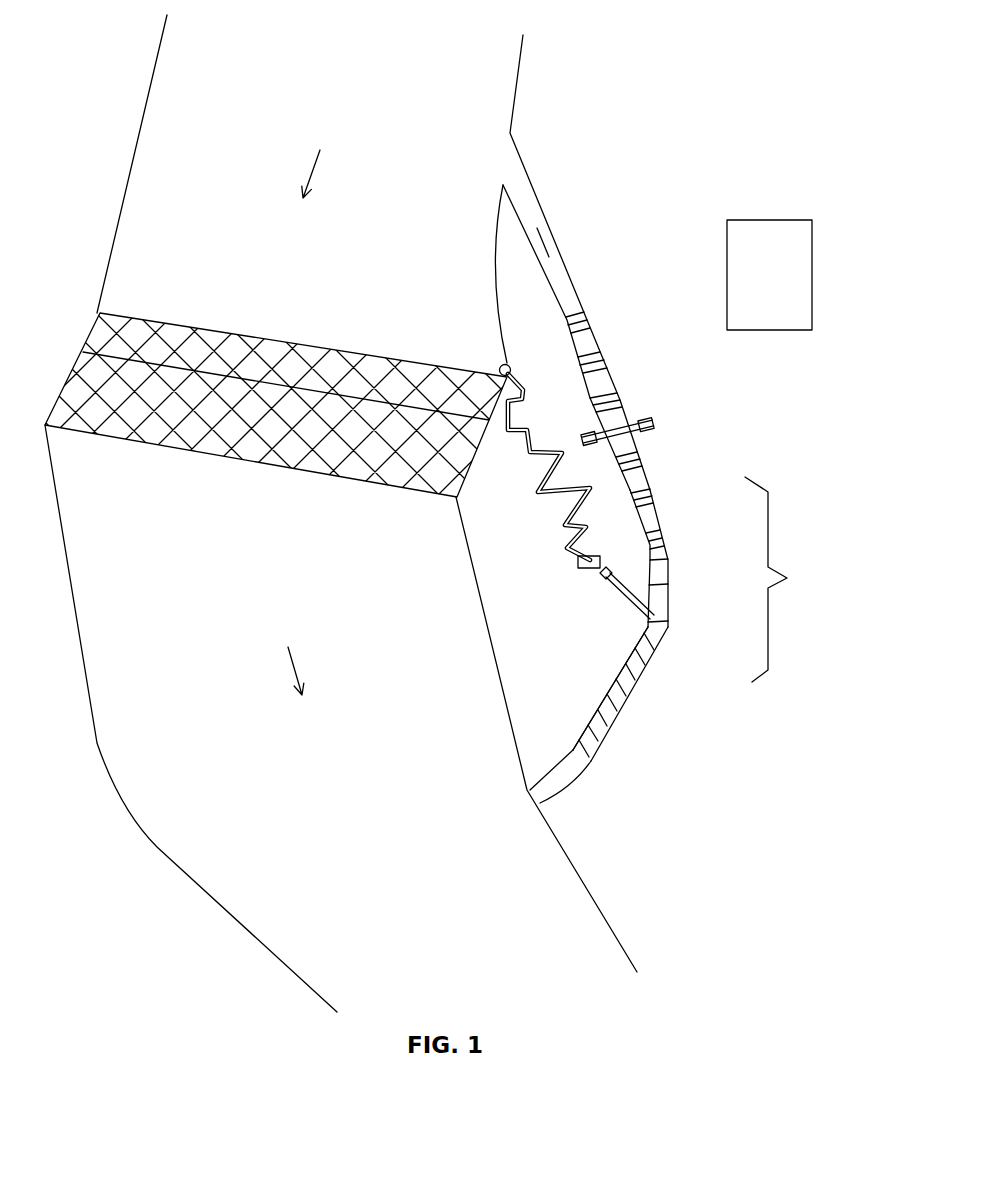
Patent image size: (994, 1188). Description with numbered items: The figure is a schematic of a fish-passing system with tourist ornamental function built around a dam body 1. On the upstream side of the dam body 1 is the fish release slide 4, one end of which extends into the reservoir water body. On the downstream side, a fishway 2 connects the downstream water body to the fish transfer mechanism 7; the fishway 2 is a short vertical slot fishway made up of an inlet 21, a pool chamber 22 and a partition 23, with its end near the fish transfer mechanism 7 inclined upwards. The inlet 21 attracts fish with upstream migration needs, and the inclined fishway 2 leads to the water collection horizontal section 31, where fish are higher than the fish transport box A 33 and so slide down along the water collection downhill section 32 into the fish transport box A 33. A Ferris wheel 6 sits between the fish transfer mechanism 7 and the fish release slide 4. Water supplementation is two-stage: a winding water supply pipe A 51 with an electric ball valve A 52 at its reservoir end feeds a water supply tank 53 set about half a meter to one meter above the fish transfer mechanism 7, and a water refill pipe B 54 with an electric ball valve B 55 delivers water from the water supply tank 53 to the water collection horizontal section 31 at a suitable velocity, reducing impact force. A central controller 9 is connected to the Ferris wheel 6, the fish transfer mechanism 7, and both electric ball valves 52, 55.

The dam body 1 is at (175, 333).
The fishway 2 is at (580, 743).
The fish release slide 4 is at (537, 207).
The Ferris wheel 6 is at (617, 423).
The fish transfer mechanism 7 is at (716, 579).
The central controller 9 is at (768, 291).
The inlet 21 is at (540, 802).
The pool chamber 22 is at (602, 693).
The partition 23 is at (617, 720).
The water collection horizontal section 31 is at (668, 626).
The water collection downhill section 32 is at (660, 595).
The fish transport box A 33 is at (667, 548).
The water supply pipe A 51 is at (532, 460).
The electric ball valve A 52 is at (499, 369).
The water supply tank 53 is at (590, 568).
The water refill pipe B 54 is at (625, 601).
The electric ball valve B 55 is at (607, 569).